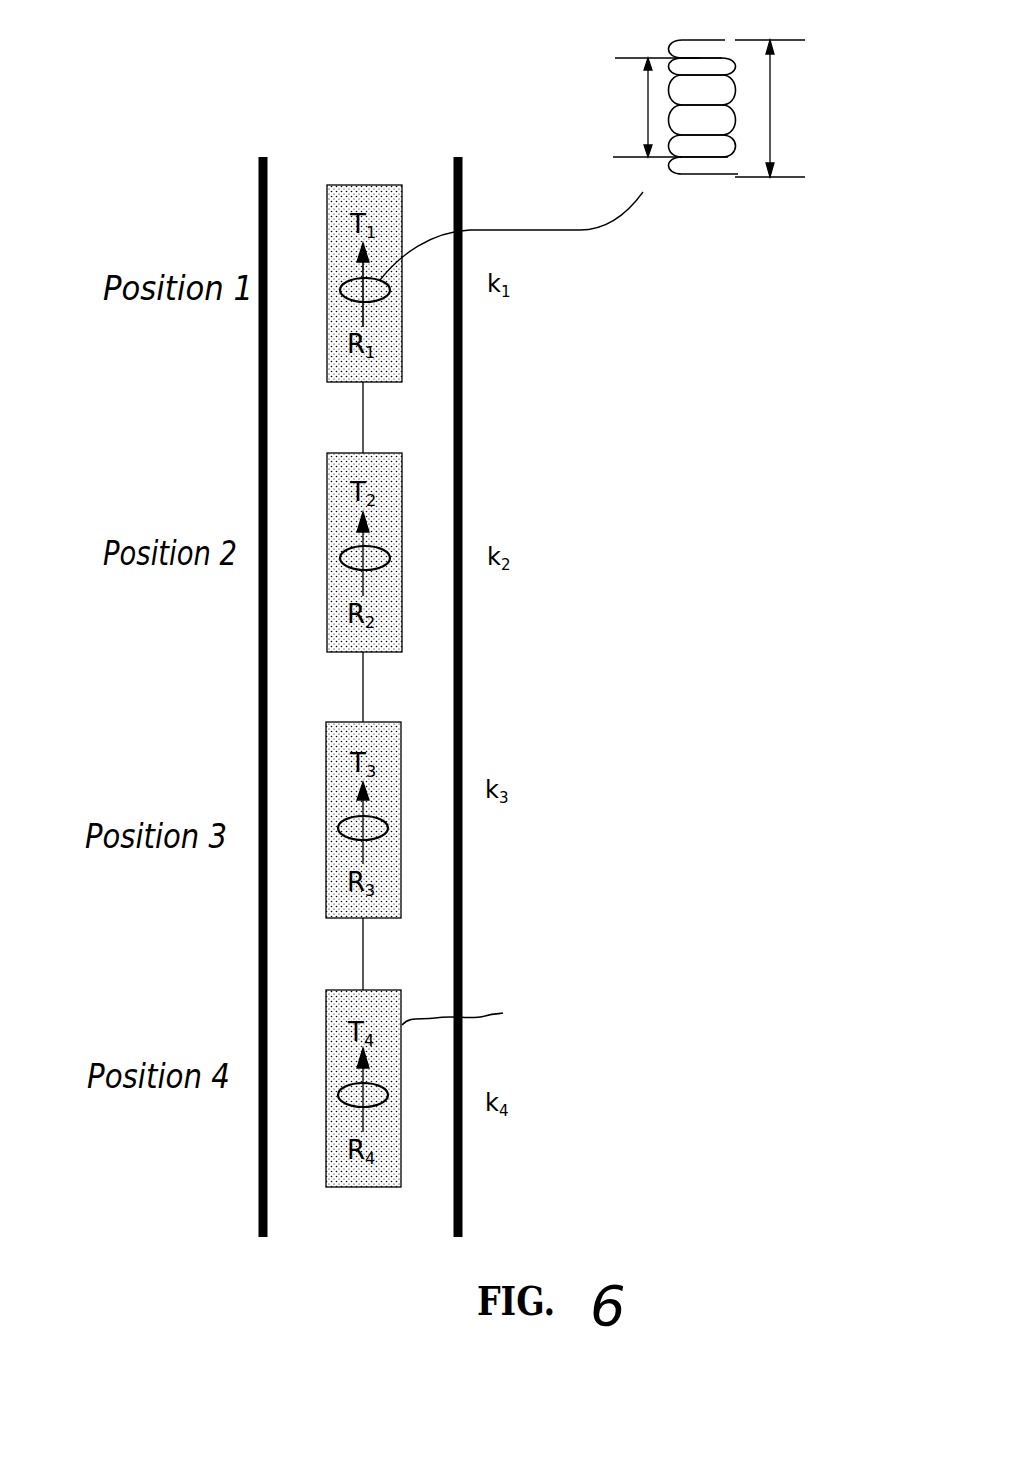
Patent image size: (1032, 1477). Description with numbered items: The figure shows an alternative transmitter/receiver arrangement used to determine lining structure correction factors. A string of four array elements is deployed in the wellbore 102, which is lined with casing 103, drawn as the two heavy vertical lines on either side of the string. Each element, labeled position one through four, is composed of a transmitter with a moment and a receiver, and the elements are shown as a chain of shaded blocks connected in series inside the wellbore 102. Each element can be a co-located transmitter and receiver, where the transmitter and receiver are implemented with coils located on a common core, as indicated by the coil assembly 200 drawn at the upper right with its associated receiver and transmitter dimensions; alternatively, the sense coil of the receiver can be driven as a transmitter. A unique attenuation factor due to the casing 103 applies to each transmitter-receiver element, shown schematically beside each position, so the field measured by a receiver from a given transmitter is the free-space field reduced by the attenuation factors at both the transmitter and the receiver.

The wellbore 102 is at (332, 1229).
The casing 103 is at (467, 912).
The co-located transmitter and receiver coils on a common core 200 is at (713, 210).